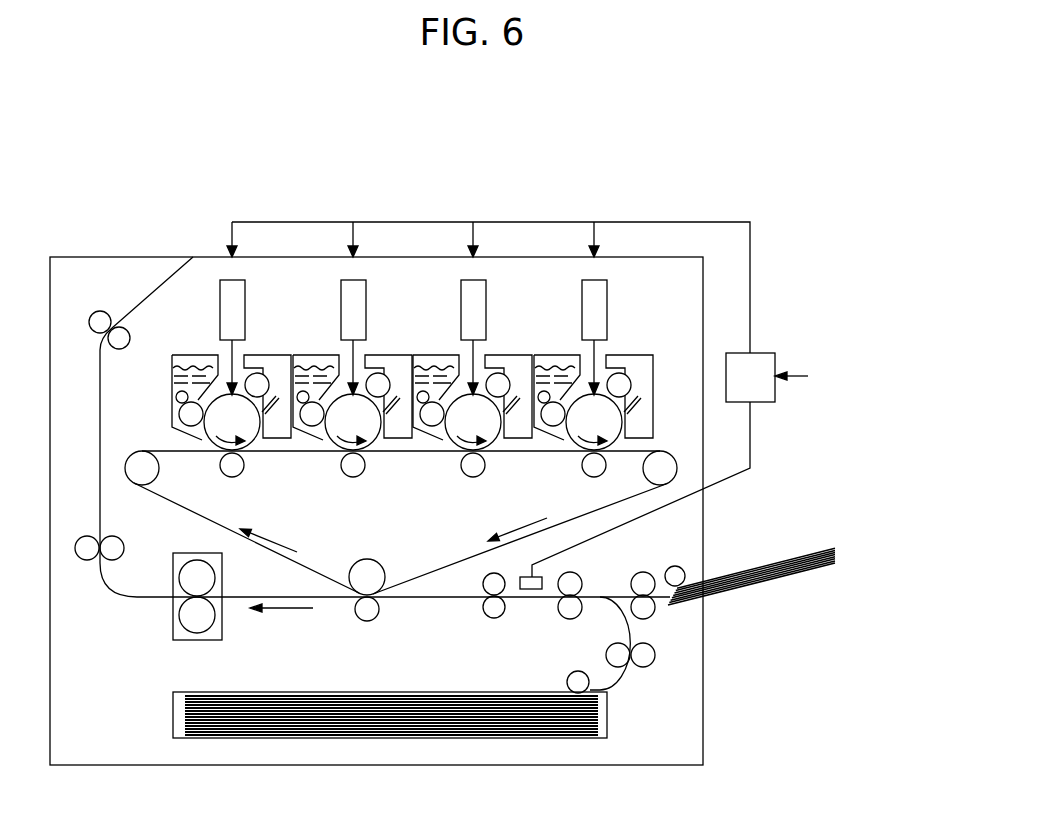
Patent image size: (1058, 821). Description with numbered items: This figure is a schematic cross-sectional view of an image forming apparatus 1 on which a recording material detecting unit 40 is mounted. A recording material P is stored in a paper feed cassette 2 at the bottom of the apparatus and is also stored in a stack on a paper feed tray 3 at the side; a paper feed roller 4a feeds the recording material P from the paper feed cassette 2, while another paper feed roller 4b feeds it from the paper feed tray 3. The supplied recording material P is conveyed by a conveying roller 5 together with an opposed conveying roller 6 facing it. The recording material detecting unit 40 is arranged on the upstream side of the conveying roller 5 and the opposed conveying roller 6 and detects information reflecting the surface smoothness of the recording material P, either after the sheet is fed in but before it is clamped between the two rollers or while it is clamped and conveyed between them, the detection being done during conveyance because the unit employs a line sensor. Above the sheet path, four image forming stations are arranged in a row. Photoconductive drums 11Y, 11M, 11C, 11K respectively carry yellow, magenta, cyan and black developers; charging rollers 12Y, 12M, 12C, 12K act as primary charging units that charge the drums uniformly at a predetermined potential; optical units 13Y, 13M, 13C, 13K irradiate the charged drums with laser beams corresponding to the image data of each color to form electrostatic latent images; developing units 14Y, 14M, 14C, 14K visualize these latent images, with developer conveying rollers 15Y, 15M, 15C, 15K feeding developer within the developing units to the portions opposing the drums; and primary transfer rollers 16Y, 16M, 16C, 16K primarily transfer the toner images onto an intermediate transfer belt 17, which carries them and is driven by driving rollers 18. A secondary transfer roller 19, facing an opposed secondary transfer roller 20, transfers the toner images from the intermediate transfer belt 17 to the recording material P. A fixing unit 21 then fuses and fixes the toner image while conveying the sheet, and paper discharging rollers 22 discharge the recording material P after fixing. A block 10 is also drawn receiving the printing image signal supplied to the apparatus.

The image forming apparatus 1 is at (704, 287).
The paper feed cassette 2 is at (607, 717).
The paper feed tray 3 is at (744, 590).
The paper feed roller 4a is at (576, 672).
The paper feed roller 4b is at (674, 566).
The conveying roller 5 is at (500, 573).
The opposed conveying roller 6 is at (493, 620).
The controller 10 is at (766, 402).
The photoconductive drum 11Y is at (253, 428).
The photoconductive drum 11M is at (374, 428).
The photoconductive drum 11C is at (494, 428).
The photoconductive drum 11K is at (614, 428).
The charging roller 12Y is at (257, 373).
The charging roller 12M is at (378, 373).
The charging roller 12C is at (498, 373).
The charging roller 12K is at (619, 373).
The optical unit 13Y is at (220, 302).
The optical unit 13M is at (341, 302).
The optical unit 13C is at (461, 302).
The optical unit 13K is at (582, 302).
The developing unit 14Y is at (192, 355).
The developing unit 14M is at (313, 355).
The developing unit 14C is at (433, 355).
The developing unit 14K is at (555, 355).
The developer conveying roller 15Y is at (191, 420).
The developer conveying roller 15M is at (312, 420).
The developer conveying roller 15C is at (432, 420).
The developer conveying roller 15K is at (553, 420).
The primary transfer roller 16Y is at (232, 477).
The primary transfer roller 16M is at (353, 477).
The primary transfer roller 16C is at (473, 477).
The primary transfer roller 16K is at (592, 477).
The intermediate transfer belt 17 is at (573, 521).
The driving rollers 18 is at (142, 455).
The secondary transfer roller 19 is at (365, 570).
The opposed secondary transfer roller 20 is at (364, 622).
The fixing unit 21 is at (181, 642).
The paper discharging rollers 22 is at (100, 311).
The recording material detecting unit 40 is at (530, 589).
The recording material P is at (415, 692).